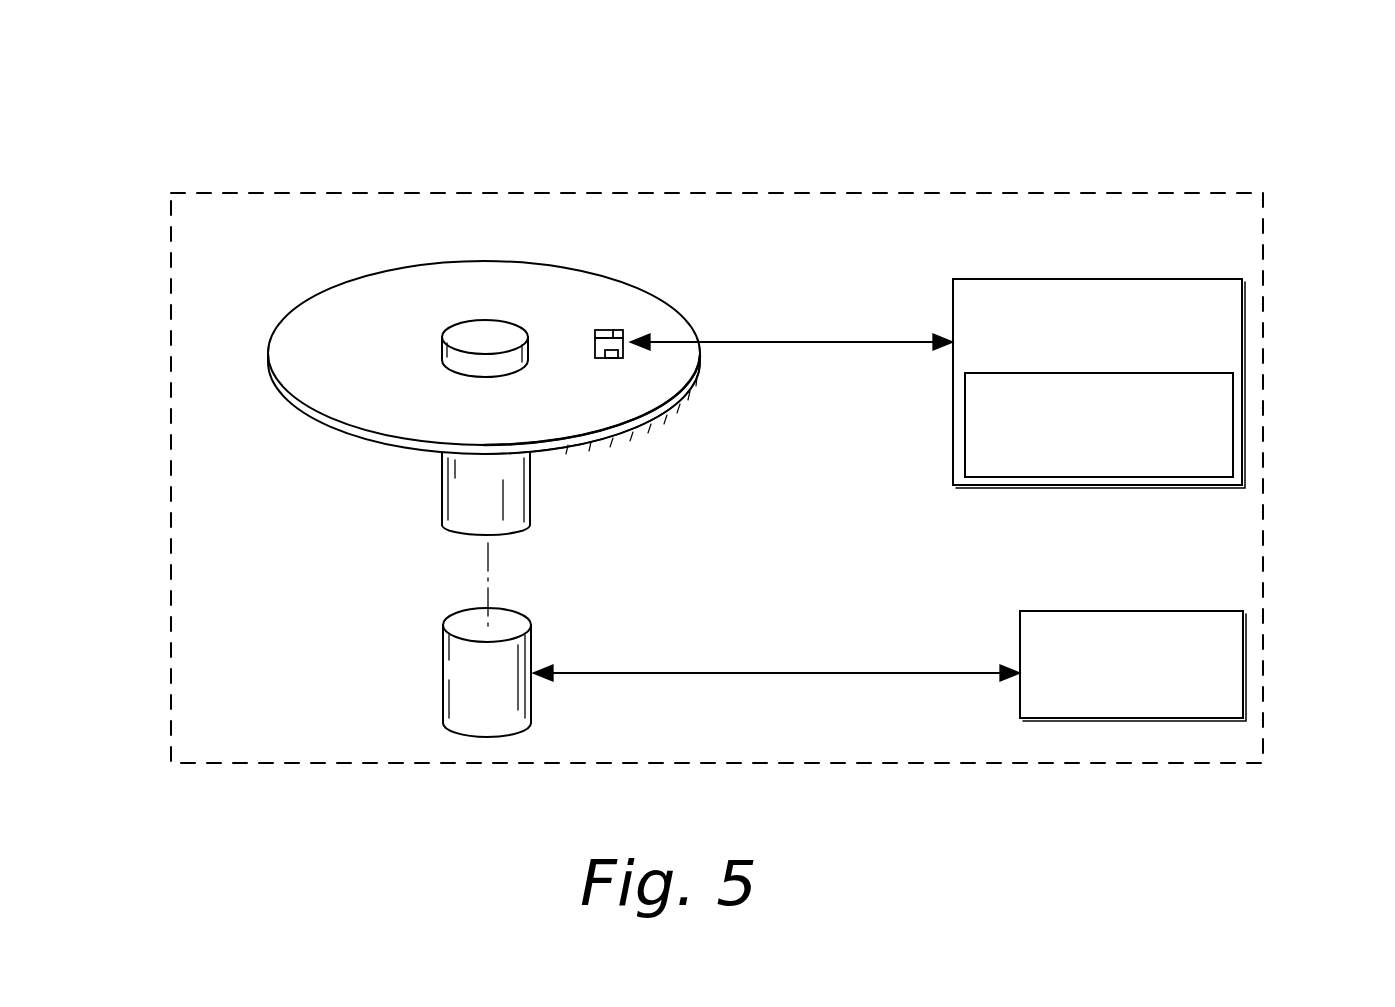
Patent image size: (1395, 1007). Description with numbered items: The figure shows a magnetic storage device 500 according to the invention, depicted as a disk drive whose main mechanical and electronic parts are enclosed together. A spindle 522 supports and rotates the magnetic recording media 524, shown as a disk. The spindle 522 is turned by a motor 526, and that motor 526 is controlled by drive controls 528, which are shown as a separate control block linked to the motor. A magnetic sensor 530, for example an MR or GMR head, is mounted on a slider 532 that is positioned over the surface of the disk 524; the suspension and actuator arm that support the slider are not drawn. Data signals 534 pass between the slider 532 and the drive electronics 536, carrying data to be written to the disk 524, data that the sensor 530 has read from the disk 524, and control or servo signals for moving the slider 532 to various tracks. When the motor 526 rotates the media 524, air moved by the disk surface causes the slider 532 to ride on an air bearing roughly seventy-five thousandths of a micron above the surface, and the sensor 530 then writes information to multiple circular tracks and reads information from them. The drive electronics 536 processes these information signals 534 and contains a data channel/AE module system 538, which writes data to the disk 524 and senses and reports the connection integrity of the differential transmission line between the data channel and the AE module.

The magnetic storage device 500 is at (865, 133).
The spindle 522 is at (450, 483).
The magnetic recording media 524 is at (333, 301).
The motor 526 is at (450, 667).
The drive controls 528 is at (1093, 611).
The magnetic sensor 530 is at (618, 358).
The slider 532 is at (615, 330).
The data signals 534 is at (800, 345).
The drive electronics 536 is at (1093, 279).
The data channel/AE module system 538 is at (1233, 403).